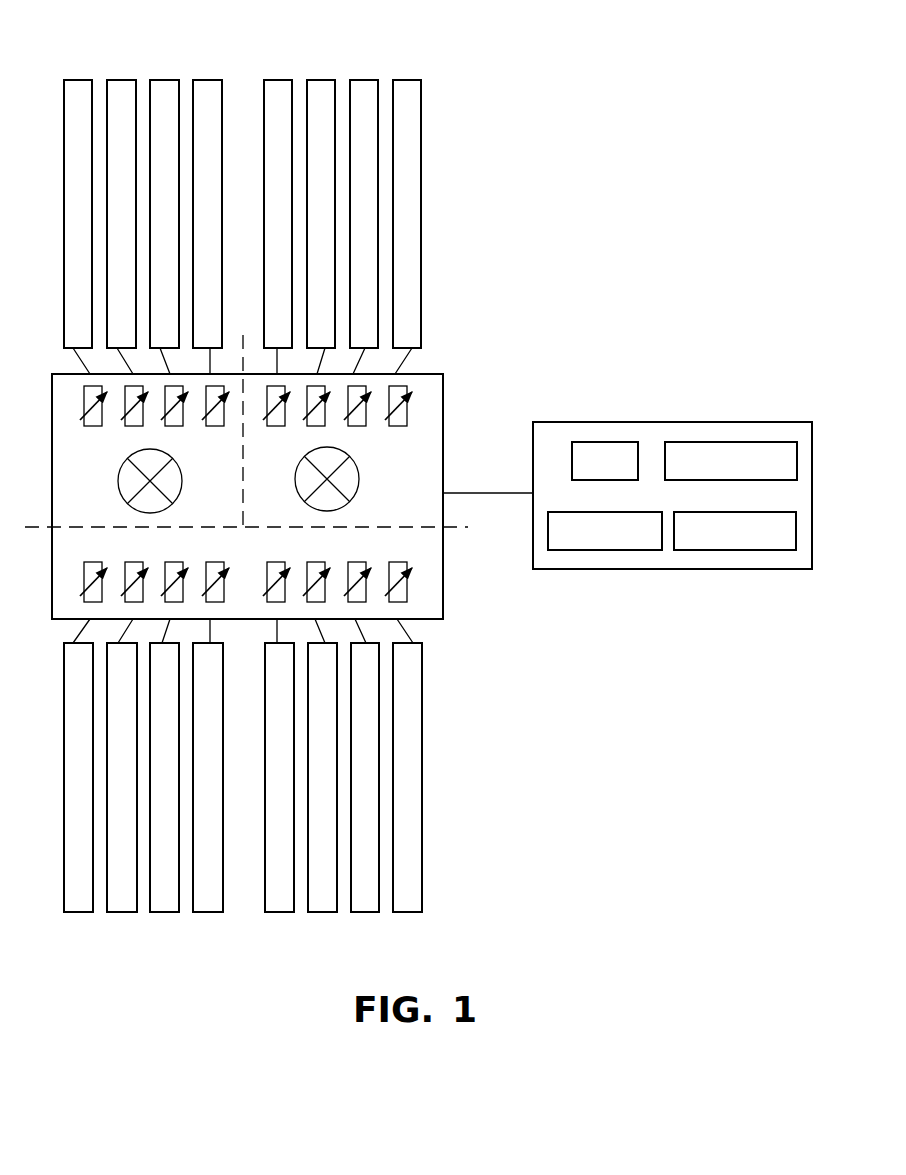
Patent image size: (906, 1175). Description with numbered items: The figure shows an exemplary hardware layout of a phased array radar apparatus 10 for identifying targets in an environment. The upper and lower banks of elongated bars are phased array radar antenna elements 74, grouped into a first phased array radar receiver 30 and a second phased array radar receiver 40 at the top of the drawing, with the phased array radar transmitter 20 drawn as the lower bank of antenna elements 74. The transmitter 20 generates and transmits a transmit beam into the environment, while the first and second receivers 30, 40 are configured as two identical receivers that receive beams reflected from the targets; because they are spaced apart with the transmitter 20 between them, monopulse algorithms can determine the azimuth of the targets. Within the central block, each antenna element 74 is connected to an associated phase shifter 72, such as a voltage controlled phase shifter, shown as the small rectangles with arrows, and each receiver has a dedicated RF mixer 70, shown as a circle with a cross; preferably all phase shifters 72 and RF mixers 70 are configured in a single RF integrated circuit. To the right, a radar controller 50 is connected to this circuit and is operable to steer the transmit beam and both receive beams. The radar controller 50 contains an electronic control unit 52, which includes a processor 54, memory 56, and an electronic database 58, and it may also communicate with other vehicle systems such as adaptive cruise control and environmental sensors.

The radar apparatus 10 is at (507, 65).
The phased array radar transmitter 20 is at (510, 851).
The first phased array radar receiver 30 is at (408, 463).
The second phased array radar receiver 40 is at (140, 62).
The radar controller 50 is at (672, 476).
The electronic control unit 52 is at (602, 442).
The processor 54 is at (732, 442).
The memory 56 is at (599, 550).
The electronic database 58 is at (737, 550).
The RF mixer 70 is at (359, 478).
The phase shifter 72 is at (403, 386).
The antenna element 74 is at (408, 175).